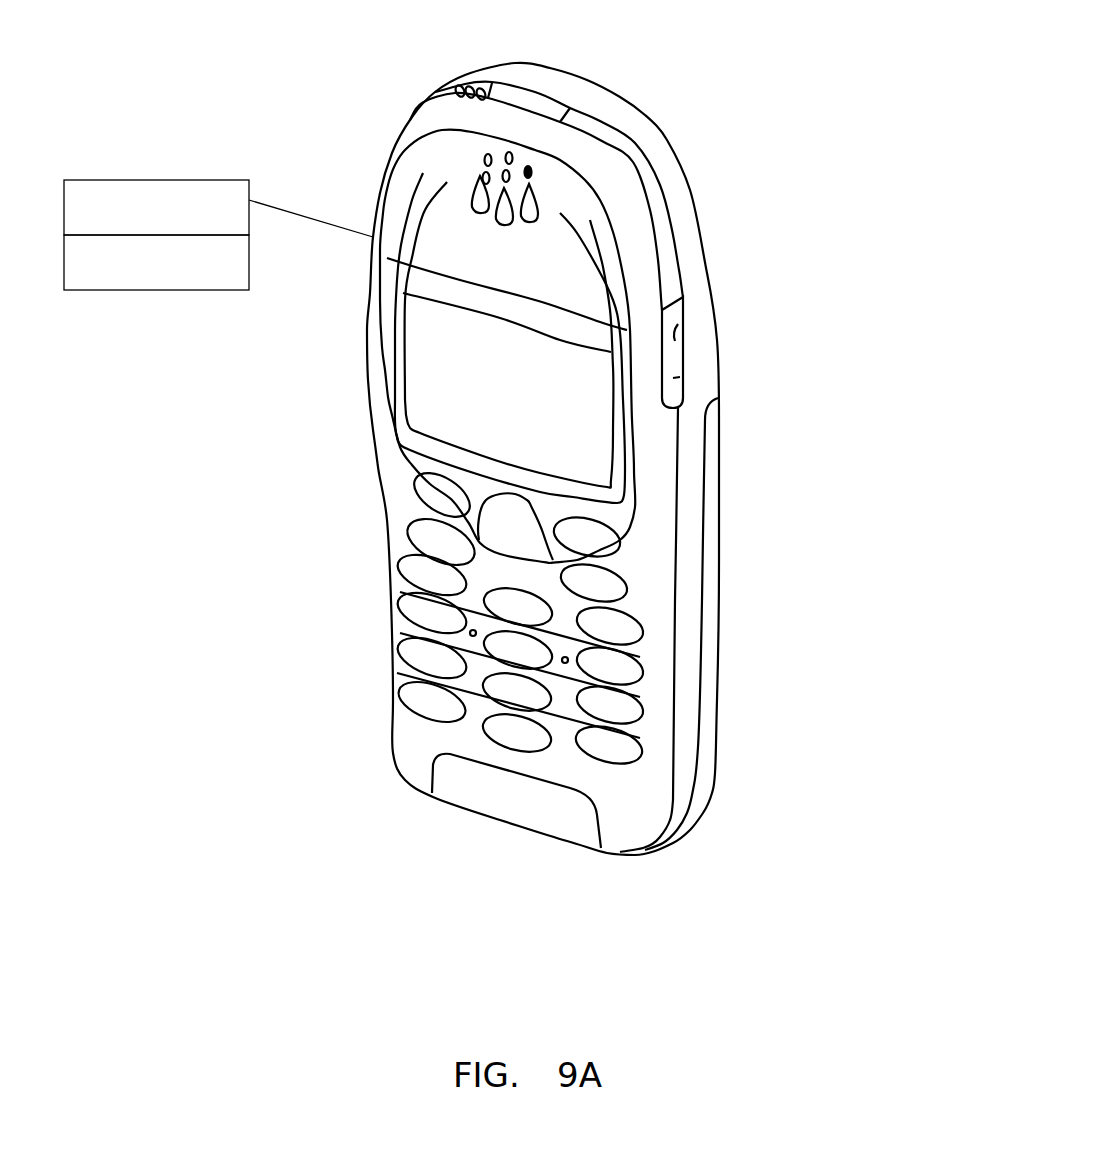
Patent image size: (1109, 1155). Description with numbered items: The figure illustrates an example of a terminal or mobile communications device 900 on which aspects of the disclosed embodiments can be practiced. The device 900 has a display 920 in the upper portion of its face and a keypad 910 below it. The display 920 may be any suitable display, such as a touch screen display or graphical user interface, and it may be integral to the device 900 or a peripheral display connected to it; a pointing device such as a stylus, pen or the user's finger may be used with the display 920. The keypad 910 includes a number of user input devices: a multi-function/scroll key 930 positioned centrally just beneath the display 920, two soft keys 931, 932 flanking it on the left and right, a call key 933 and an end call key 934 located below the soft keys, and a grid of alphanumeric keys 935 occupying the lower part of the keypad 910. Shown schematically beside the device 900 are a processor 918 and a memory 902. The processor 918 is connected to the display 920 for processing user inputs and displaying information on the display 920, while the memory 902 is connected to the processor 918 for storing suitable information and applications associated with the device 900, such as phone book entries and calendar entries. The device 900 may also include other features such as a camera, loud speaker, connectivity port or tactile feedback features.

The mobile communications device 900 is at (660, 78).
The processor 918 is at (120, 180).
The memory 902 is at (120, 290).
The display 920 is at (568, 423).
The multi-function/scroll key 930 is at (530, 527).
The soft key 931 is at (433, 488).
The soft key 932 is at (597, 531).
The call key 933 is at (433, 533).
The end call key 934 is at (603, 583).
The alphanumeric keys 935 is at (433, 703).
The keypad 910 is at (624, 764).